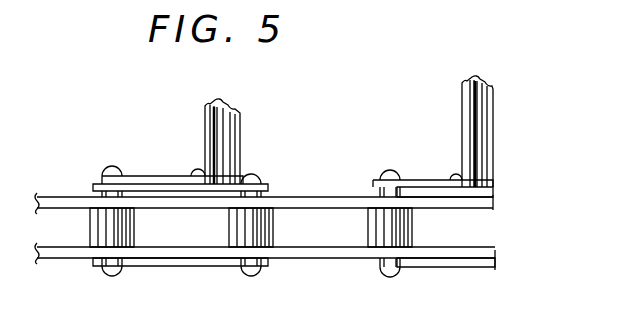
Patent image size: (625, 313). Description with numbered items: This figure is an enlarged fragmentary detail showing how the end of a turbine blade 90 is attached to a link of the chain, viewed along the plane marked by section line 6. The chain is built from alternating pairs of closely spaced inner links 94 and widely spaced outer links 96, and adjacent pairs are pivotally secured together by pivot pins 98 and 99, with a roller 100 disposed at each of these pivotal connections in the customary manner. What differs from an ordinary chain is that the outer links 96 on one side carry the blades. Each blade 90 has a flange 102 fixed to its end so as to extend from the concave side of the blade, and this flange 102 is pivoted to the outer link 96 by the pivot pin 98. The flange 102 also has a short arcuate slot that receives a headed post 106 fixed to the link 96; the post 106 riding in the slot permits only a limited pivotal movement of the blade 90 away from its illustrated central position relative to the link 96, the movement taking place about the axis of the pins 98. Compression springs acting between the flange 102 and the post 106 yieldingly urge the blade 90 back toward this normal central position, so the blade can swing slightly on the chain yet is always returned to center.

The section line 6- 6 is at (175, 121).
The turbine blade 90 is at (233, 130).
The inner links 94 is at (64, 197).
The outer links 96 is at (196, 191).
The pivot pin 98 is at (115, 169).
The pivot pin 99 is at (258, 174).
The roller 100 is at (134, 232).
The flange 102 is at (172, 182).
The headed post 106 is at (197, 172).